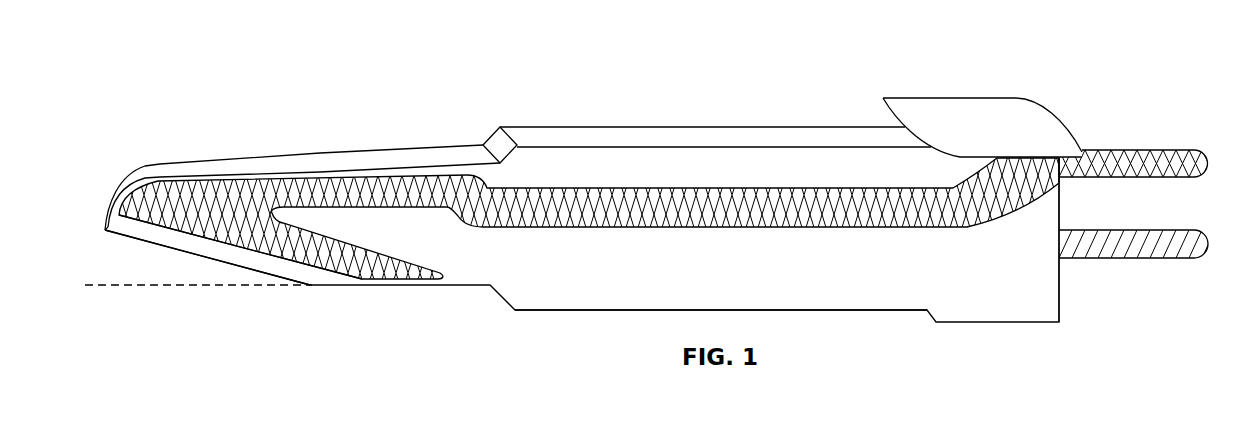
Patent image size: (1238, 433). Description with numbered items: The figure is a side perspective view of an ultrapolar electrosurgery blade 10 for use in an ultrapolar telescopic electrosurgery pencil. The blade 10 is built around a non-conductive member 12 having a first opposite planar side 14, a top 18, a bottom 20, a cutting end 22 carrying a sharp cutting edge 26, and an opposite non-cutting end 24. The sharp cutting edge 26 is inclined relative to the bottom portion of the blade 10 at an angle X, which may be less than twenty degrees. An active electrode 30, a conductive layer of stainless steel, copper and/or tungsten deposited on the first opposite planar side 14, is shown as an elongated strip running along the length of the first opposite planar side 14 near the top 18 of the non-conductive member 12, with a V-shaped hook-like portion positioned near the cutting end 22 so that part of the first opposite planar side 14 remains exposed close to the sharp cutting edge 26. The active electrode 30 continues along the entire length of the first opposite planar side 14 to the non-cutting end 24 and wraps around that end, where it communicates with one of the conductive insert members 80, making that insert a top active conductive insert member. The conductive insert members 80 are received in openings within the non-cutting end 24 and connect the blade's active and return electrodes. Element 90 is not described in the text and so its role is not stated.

The ultrapolar electrosurgery blade 10 is at (627, 195).
The non-conductive member 12 is at (545, 170).
The first opposite planar side 14 is at (675, 268).
The top 18 is at (685, 140).
The bottom 20 is at (587, 313).
The cutting end 22 is at (100, 232).
The non-cutting end 24 is at (1060, 208).
The sharp cutting edge 26 is at (222, 267).
The active electrode 30 is at (192, 213).
The conductive insert members 80 is at (1132, 148).
The sheath flap 90 is at (987, 112).
The angle X is at (136, 243).